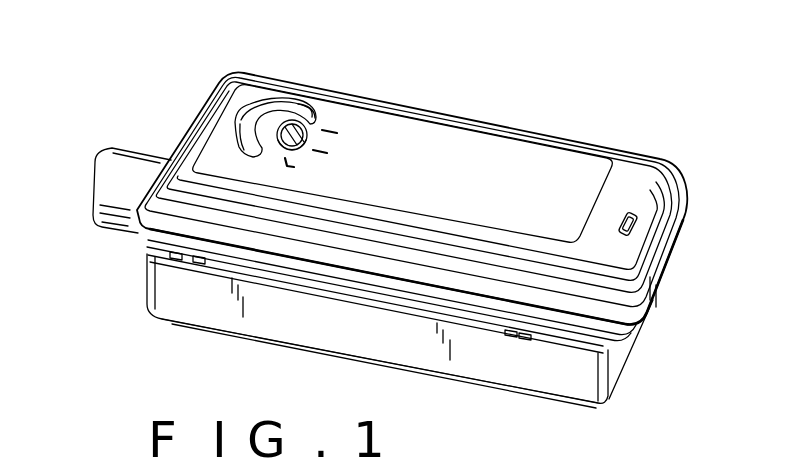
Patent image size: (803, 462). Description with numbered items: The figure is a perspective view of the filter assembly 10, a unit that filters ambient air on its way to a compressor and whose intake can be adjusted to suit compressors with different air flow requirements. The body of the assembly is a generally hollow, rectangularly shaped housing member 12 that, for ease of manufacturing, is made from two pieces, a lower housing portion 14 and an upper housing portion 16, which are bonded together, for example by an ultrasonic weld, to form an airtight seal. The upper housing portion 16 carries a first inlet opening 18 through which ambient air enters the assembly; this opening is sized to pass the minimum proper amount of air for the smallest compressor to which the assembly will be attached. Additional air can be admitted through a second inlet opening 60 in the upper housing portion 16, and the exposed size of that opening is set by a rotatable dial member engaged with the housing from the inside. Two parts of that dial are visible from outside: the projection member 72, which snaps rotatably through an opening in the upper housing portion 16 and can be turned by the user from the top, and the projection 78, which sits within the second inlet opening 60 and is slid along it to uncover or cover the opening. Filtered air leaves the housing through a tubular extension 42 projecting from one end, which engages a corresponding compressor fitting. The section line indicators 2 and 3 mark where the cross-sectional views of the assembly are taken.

The filter assembly 10 is at (518, 80).
The housing member 12 is at (164, 330).
The lower housing portion 14 is at (577, 380).
The upper housing portion 16 is at (645, 165).
The first inlet opening 18 is at (640, 228).
The tubular extension 42 is at (134, 148).
The second inlet opening 60 is at (253, 85).
The projection member 72 is at (310, 128).
The projection 78 is at (308, 100).
The section line 2- 2 is at (88, 177).
The section line 3- 3 is at (457, 67).